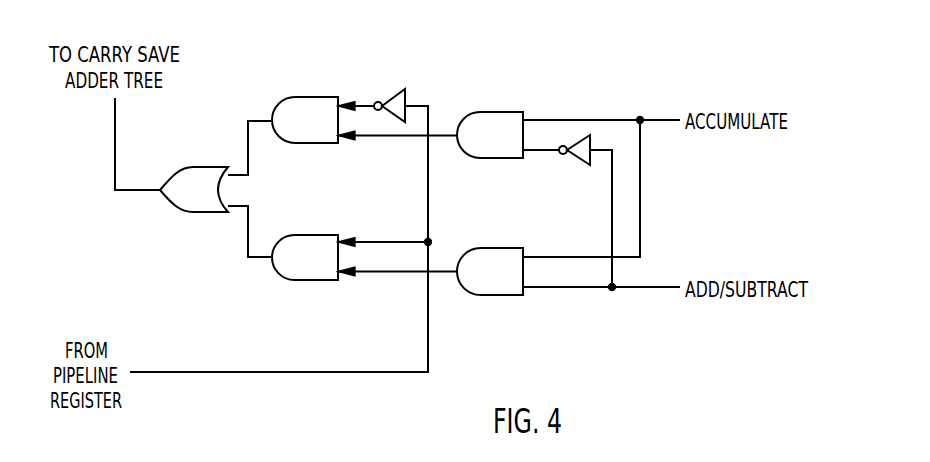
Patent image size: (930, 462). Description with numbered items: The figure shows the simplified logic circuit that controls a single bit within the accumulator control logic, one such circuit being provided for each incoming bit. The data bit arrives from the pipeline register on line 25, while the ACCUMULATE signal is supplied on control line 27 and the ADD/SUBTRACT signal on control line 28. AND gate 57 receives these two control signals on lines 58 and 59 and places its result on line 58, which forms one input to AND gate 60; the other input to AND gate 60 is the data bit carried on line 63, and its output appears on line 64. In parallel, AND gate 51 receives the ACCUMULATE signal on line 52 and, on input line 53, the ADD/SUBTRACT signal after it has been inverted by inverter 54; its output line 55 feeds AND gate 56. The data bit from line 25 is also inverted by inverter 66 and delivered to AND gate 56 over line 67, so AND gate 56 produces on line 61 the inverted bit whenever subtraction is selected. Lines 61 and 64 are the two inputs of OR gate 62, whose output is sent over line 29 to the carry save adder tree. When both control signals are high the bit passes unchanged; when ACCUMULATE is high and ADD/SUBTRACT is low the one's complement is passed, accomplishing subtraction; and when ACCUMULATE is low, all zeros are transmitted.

The line 25 is at (250, 372).
The ACCUMULATE control line 27 is at (668, 118).
The ADD/SUBTRACT control line 28 is at (648, 288).
The line 29 is at (115, 133).
The AND gate 51 is at (502, 120).
The line 52 is at (583, 118).
The input line 53 is at (550, 153).
The inverter 54 is at (583, 160).
The output line 55 is at (403, 137).
The AND gate 56 is at (300, 105).
The AND gate 57 is at (508, 287).
The line 58 is at (402, 272).
The line 59 is at (578, 288).
The AND gate 60 is at (302, 243).
The line 61 is at (248, 140).
The OR gate 62 is at (193, 173).
The line 63 is at (393, 240).
The line 64 is at (248, 242).
The inverter 66 is at (393, 100).
The line 67 is at (360, 103).